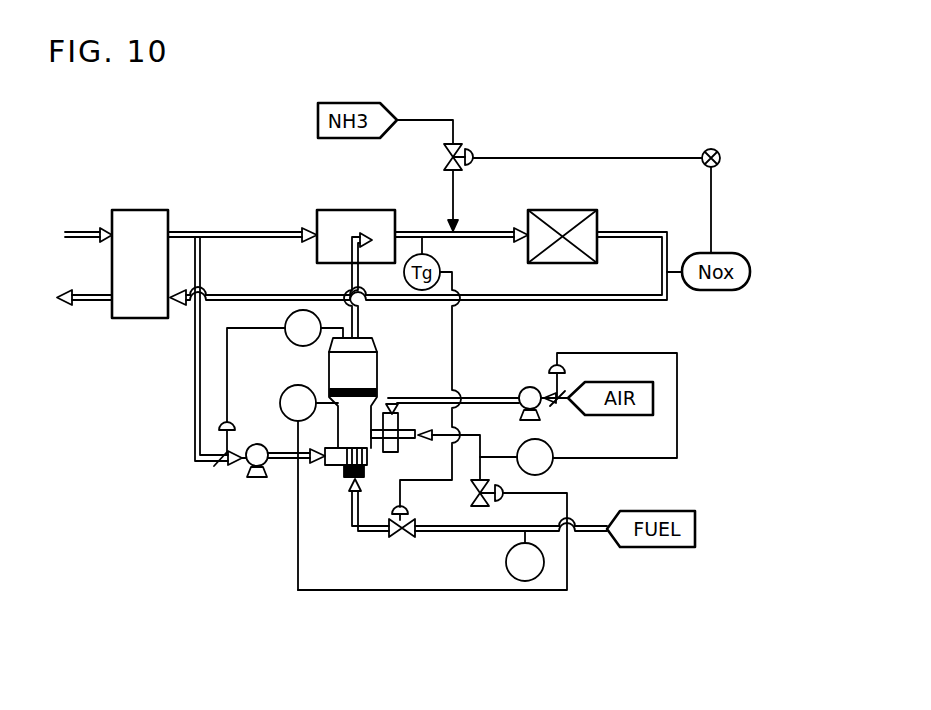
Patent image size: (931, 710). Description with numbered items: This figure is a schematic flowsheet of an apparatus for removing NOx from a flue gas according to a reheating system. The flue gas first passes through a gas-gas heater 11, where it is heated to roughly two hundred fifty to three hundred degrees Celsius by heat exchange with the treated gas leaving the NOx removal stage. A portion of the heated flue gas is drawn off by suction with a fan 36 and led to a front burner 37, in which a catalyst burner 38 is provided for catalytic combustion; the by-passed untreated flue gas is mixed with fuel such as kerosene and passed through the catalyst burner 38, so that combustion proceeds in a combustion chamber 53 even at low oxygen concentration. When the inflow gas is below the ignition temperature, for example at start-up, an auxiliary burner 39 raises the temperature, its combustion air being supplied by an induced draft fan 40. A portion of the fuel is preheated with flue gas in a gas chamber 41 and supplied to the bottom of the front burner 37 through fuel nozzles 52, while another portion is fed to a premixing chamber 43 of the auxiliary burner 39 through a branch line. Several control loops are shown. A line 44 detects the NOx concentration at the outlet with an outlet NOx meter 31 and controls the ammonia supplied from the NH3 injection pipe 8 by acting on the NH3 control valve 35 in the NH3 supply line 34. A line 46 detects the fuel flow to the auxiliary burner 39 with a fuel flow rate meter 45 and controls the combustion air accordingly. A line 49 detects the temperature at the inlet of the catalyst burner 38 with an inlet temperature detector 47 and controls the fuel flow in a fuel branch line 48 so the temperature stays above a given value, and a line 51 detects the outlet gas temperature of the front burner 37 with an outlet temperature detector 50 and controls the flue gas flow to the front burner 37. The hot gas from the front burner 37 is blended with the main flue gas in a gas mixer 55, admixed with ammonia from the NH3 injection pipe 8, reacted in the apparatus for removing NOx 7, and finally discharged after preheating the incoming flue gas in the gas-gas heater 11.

The apparatus for removing NOx 7 is at (568, 210).
The NH3 injection pipe 8 is at (452, 196).
The gas-gas heater 11 is at (142, 210).
The outlet NOx meter 31 is at (720, 158).
The NH3 supply line 34 is at (440, 120).
The NH3 control valve 35 is at (470, 150).
The fan 36 is at (258, 479).
The front burner 37 is at (378, 368).
The catalyst burner 38 is at (342, 389).
The auxiliary burner 39 is at (388, 452).
The induced draft fan 40 is at (530, 386).
The gas chamber 41 is at (334, 478).
The premixing chamber 43 is at (325, 450).
The line 44 is at (616, 158).
The fuel flow rate meter 45 is at (506, 563).
The line 46 is at (677, 412).
The inlet temperature detector 47 is at (280, 403).
The fuel branch line 48 is at (484, 430).
The line 49 is at (372, 590).
The outlet temperature detector 50 is at (300, 310).
The line 51 is at (195, 365).
The fuel nozzles 52 is at (340, 492).
The combustion chamber 53 is at (378, 352).
The gas mixer 55 is at (336, 210).